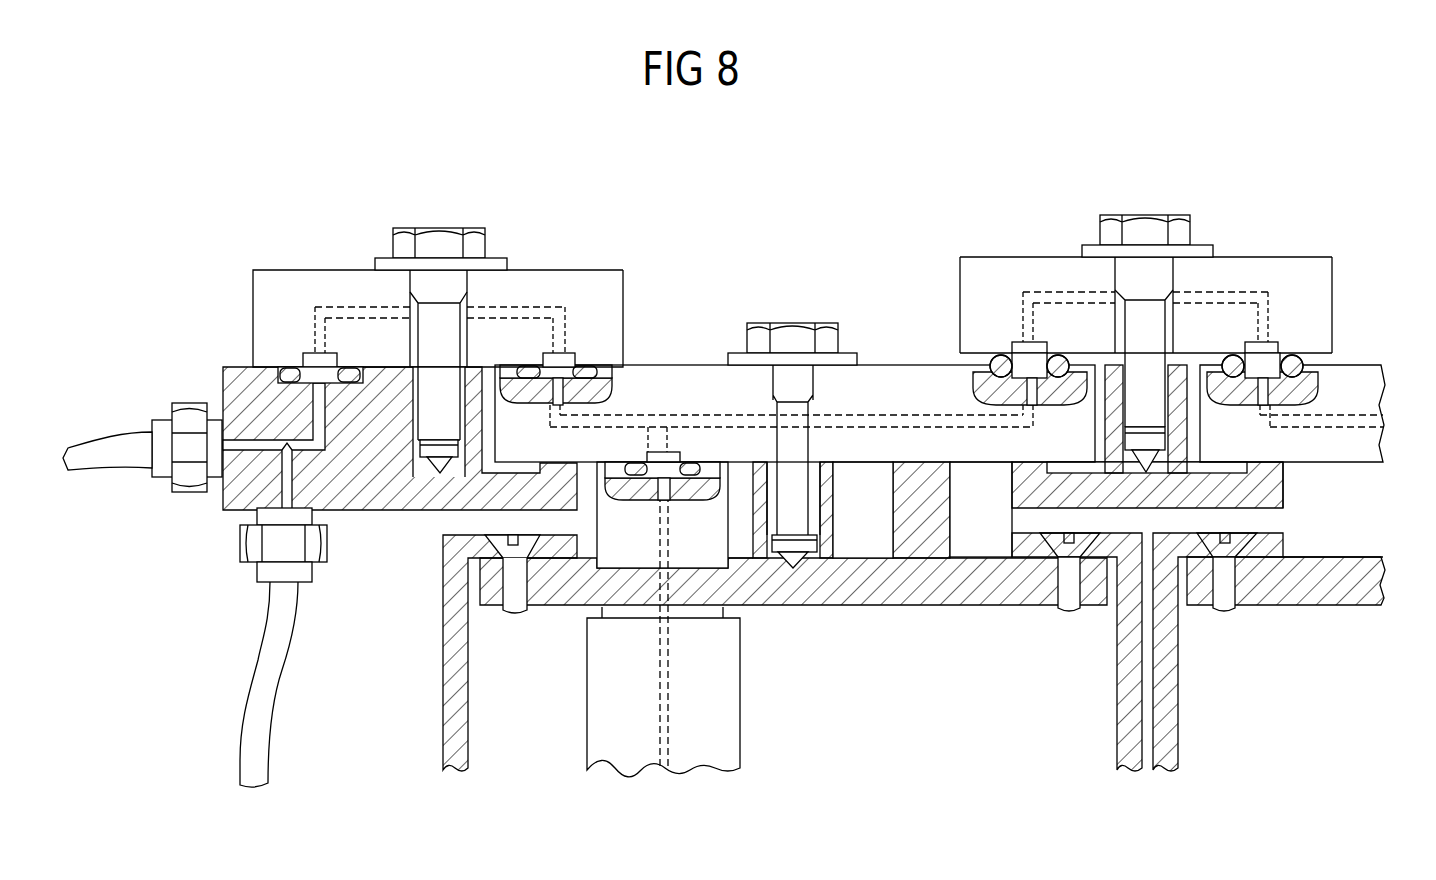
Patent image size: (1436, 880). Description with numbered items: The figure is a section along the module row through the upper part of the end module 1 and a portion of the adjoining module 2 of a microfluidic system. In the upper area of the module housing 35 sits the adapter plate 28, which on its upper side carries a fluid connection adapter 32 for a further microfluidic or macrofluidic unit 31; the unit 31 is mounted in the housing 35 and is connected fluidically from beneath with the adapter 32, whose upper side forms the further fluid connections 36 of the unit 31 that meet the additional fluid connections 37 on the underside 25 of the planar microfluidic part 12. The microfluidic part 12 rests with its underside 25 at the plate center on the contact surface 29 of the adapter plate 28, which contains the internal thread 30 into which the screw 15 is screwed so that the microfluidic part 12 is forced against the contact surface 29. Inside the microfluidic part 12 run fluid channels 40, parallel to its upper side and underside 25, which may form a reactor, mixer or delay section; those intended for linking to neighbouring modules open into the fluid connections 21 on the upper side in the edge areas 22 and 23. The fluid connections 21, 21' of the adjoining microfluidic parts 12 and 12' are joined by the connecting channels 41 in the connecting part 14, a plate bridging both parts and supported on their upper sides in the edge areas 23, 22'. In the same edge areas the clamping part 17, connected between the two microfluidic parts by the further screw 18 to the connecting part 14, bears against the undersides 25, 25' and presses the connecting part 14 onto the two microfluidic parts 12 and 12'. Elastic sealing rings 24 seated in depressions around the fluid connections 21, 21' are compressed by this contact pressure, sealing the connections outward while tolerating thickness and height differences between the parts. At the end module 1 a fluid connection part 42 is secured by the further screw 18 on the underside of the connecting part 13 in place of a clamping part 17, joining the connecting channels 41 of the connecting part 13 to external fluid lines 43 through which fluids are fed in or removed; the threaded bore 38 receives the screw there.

The end module 1 is at (452, 653).
The module 2 is at (1172, 733).
The microfluidic part 12 is at (795, 386).
The microfluidic part 12' is at (1314, 386).
The connecting part 13 is at (278, 269).
The connecting part 14 is at (994, 250).
The screw 15 is at (797, 338).
The clamping part 17 is at (1285, 492).
The further screw 18 is at (440, 245).
The fluid connection 21 is at (1030, 298).
The fluid connection 21' is at (909, 298).
The edge area 22 is at (581, 307).
The edge area 22' is at (1357, 300).
The edge area 23 is at (983, 327).
The elastic sealing ring 24 is at (587, 364).
The underside 25 is at (981, 509).
The underside 25' is at (1356, 509).
The adapter plate 28 is at (890, 610).
The contact surface 29 is at (835, 447).
The internal thread 30 is at (820, 520).
The microfluidic or macrofluidic unit 31 is at (715, 735).
The fluid connection adapter 32 is at (712, 552).
The module housing 35 is at (455, 710).
The further fluid connection 36 is at (672, 468).
The additional fluid connection 37 is at (652, 455).
The threaded bore 38 is at (414, 418).
The fluid channel 40 is at (893, 418).
The connecting channel 41 is at (345, 310).
The fluid connection part 42 is at (373, 513).
The external fluid line 43 is at (112, 445).